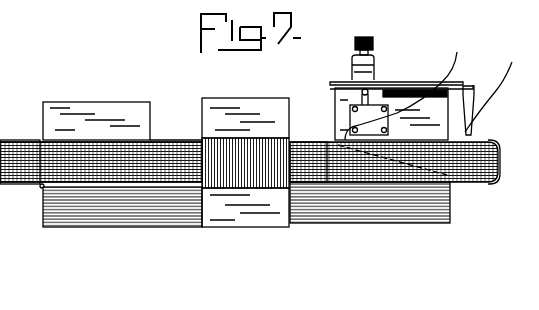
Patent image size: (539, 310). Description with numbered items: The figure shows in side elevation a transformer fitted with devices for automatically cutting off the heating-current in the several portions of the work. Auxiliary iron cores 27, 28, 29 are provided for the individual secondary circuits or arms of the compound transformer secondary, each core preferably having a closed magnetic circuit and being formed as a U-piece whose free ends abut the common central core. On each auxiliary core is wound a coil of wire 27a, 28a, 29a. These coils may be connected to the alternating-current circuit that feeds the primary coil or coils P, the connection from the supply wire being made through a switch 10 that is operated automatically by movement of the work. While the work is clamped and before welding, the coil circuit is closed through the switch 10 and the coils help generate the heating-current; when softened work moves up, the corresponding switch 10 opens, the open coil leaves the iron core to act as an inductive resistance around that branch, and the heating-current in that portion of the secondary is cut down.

The auxiliary iron core 29 is at (26, 143).
The coil of wire 29a is at (33, 187).
The auxiliary iron core 28 is at (182, 142).
The coil of wire 28a is at (247, 138).
The primary coil P is at (325, 140).
The auxiliary iron core 27 is at (479, 142).
The coil of wire 27a is at (483, 182).
The switch 10 is at (350, 112).